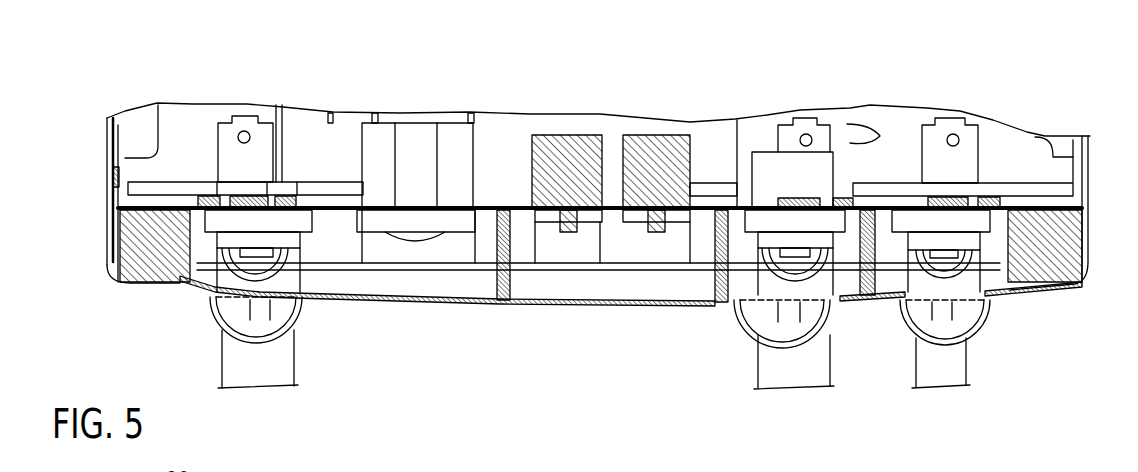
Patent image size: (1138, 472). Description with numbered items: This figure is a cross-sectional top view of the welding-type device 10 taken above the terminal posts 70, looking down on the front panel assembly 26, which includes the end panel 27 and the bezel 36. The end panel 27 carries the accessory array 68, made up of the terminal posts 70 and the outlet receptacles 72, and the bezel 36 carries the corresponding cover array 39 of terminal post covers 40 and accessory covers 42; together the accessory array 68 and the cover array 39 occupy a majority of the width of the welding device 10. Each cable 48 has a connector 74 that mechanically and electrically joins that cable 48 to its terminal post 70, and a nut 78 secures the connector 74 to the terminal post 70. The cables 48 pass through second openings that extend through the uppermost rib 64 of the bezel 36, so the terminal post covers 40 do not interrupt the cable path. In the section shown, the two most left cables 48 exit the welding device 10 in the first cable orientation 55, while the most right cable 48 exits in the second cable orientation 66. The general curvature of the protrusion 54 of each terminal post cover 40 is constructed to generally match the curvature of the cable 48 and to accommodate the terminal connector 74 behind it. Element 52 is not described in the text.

The welding-type device 10 is at (184, 52).
The front panel assembly 26 is at (497, 392).
The end panel 27 is at (166, 205).
The bezel 36 is at (1085, 285).
The cover array 39 is at (103, 296).
The terminal post cover 40 is at (178, 276).
The accessory cover 42 is at (463, 307).
The cable 48 is at (247, 374).
The housing wall section 52 is at (124, 338).
The protrusion 54 is at (218, 310).
The first cable orientation 55 is at (300, 392).
The uppermost rib 64 is at (985, 286).
The second cable orientation 66 is at (966, 395).
The accessory array 68 is at (576, 253).
The terminal post 70 is at (283, 218).
The outlet receptacle 72 is at (586, 140).
The connector 74 is at (286, 233).
The nut 78 is at (274, 265).